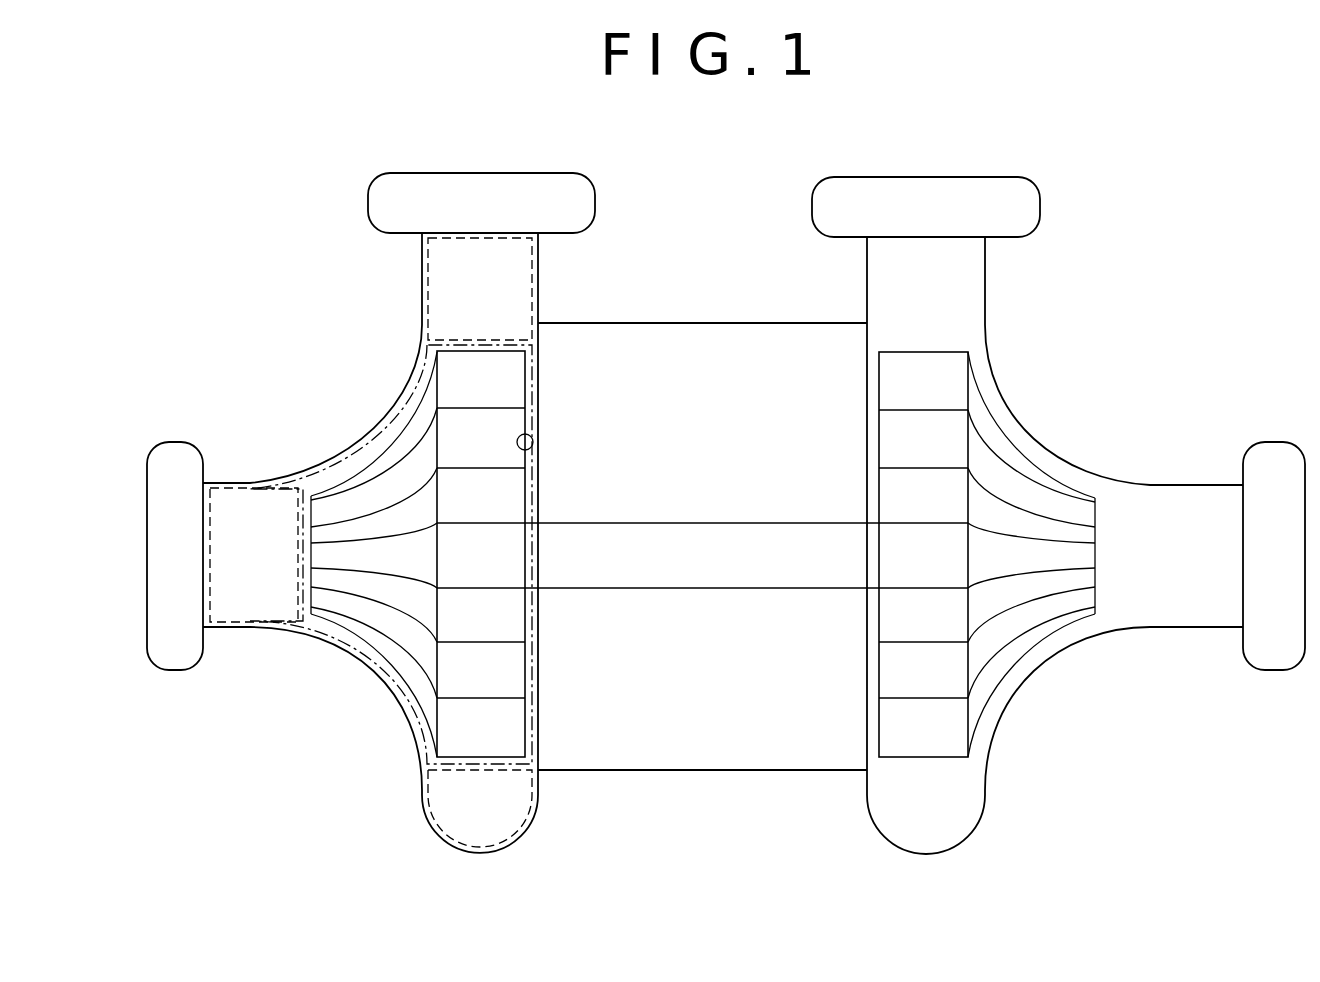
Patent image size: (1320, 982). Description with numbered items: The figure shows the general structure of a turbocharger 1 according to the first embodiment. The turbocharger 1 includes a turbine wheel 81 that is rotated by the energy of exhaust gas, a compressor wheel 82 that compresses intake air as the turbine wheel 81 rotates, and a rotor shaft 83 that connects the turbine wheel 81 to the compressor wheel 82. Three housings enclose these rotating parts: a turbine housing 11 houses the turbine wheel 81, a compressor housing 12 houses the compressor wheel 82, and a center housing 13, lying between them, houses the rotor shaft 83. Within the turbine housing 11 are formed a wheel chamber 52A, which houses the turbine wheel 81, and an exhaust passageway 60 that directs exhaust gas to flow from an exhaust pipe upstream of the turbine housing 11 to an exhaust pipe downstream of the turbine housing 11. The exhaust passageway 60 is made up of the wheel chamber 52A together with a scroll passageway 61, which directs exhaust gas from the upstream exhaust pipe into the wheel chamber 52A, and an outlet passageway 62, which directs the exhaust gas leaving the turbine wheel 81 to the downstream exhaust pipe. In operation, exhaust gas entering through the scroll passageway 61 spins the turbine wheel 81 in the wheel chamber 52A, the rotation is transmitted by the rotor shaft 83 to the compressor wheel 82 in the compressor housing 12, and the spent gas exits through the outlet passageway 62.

The turbocharger 1 is at (1142, 288).
The turbine housing 11 is at (538, 800).
The compressor housing 12 is at (866, 800).
The center housing 13 is at (700, 771).
The wheel chamber 52A is at (533, 441).
The exhaust passageway 60 is at (283, 463).
The scroll passageway 61 is at (497, 301).
The outlet passageway 62 is at (268, 573).
The turbine wheel 81 is at (538, 662).
The compressor wheel 82 is at (867, 660).
The rotor shaft 83 is at (702, 590).